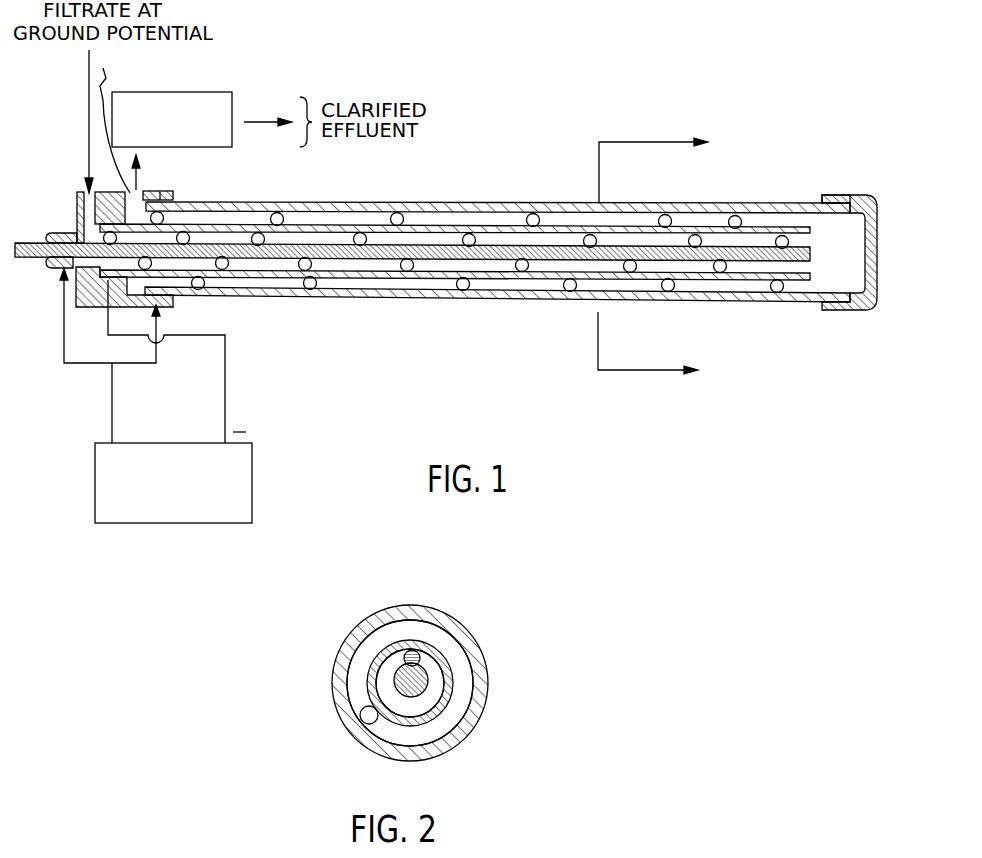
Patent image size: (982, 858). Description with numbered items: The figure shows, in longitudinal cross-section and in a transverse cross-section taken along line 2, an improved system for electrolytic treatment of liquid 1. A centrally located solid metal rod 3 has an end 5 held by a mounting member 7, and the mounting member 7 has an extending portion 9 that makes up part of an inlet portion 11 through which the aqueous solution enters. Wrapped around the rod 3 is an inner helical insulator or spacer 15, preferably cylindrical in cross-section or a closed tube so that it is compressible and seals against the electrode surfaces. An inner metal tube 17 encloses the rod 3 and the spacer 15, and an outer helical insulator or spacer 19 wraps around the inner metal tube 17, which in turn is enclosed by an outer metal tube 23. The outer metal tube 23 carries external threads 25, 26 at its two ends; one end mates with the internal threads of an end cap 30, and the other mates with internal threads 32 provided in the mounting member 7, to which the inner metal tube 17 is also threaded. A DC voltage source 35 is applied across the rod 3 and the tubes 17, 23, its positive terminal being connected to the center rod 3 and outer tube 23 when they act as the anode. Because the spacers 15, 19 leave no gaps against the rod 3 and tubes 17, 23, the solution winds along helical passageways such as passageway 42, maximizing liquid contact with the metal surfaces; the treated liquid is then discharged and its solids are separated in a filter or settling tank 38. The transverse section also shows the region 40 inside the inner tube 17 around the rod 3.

In FIG. 1, the system for electrolytic treatment of liquid 1 is at (490, 120).
In FIG. 1, the section line 2— 2 is at (660, 258).
In FIG. 1, the rod 3 is at (794, 263).
In FIG. 2, the rod 3 is at (422, 685).
In FIG. 1, the end of rod 5 is at (64, 268).
In FIG. 1, the mounting member 7 is at (77, 235).
In FIG. 1, the extending portion 9 is at (78, 192).
In FIG. 1, the inlet portion 11 is at (88, 192).
In FIG. 1, the inner helical insulator or spacer 15 is at (518, 270).
In FIG. 2, the inner helical insulator or spacer 15 is at (418, 660).
In FIG. 1, the inner metal tube 17 is at (763, 227).
In FIG. 2, the inner metal tube 17 is at (447, 660).
In FIG. 1, the outer helical insulator or spacer 19 is at (401, 216).
In FIG. 2, the outer helical insulator or spacer 19 is at (370, 715).
In FIG. 1, the outer metal tube 23 is at (508, 200).
In FIG. 2, the outer metal tube 23 is at (457, 630).
In FIG. 1, the external threads 25 is at (837, 200).
In FIG. 1, the external threads 26 is at (174, 197).
In FIG. 1, the end cap 30 is at (868, 196).
In FIG. 1, the internal threads 32 is at (160, 192).
In FIG. 1, the DC voltage source 35 is at (242, 510).
In FIG. 1, the settling tank or basin 38 is at (227, 110).
In FIG. 2, the inner chamber 40 is at (383, 680).
In FIG. 2, the helical passageway 42 is at (375, 640).